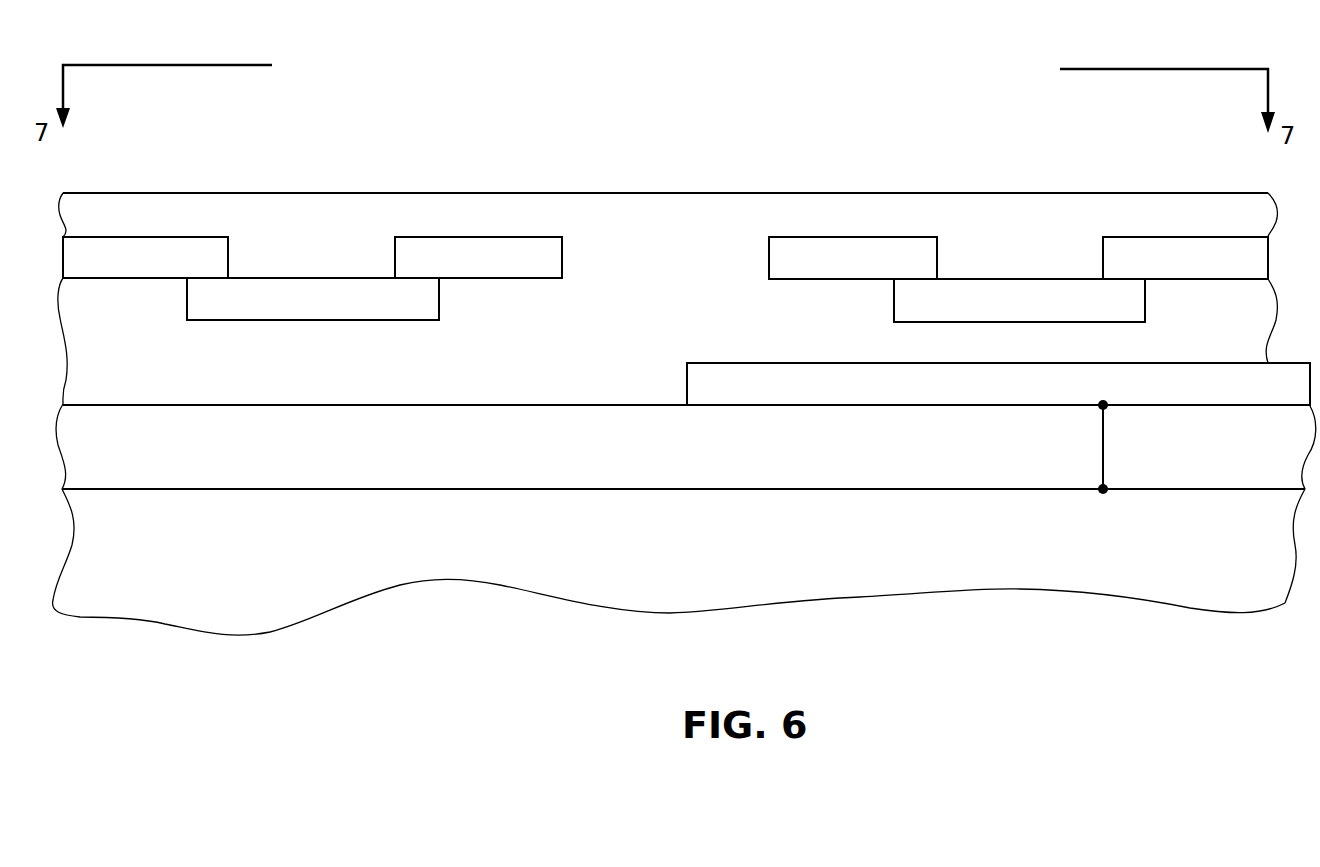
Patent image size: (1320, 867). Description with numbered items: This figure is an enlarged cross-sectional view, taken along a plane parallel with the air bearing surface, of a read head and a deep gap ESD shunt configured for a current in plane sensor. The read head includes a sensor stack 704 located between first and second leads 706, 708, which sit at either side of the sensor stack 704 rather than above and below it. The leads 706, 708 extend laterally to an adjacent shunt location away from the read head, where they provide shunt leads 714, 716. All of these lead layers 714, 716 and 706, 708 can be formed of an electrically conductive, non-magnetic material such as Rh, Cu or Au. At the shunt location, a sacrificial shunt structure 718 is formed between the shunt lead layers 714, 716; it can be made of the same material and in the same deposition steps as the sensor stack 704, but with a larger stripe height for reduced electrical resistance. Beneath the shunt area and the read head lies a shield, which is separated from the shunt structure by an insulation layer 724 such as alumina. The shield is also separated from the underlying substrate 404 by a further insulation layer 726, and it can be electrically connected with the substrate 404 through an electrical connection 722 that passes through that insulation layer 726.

The substrate 404 is at (705, 545).
The sensor stack 704 is at (921, 384).
The first lead 706 is at (458, 252).
The second lead 708 is at (155, 258).
The shunt lead 714 is at (1183, 250).
The shunt lead 716 is at (866, 254).
The sacrificial shunt structure 718 is at (907, 297).
The electrical connection 722 is at (1106, 440).
The insulation layer 724 is at (692, 299).
The insulation layer 726 is at (700, 449).